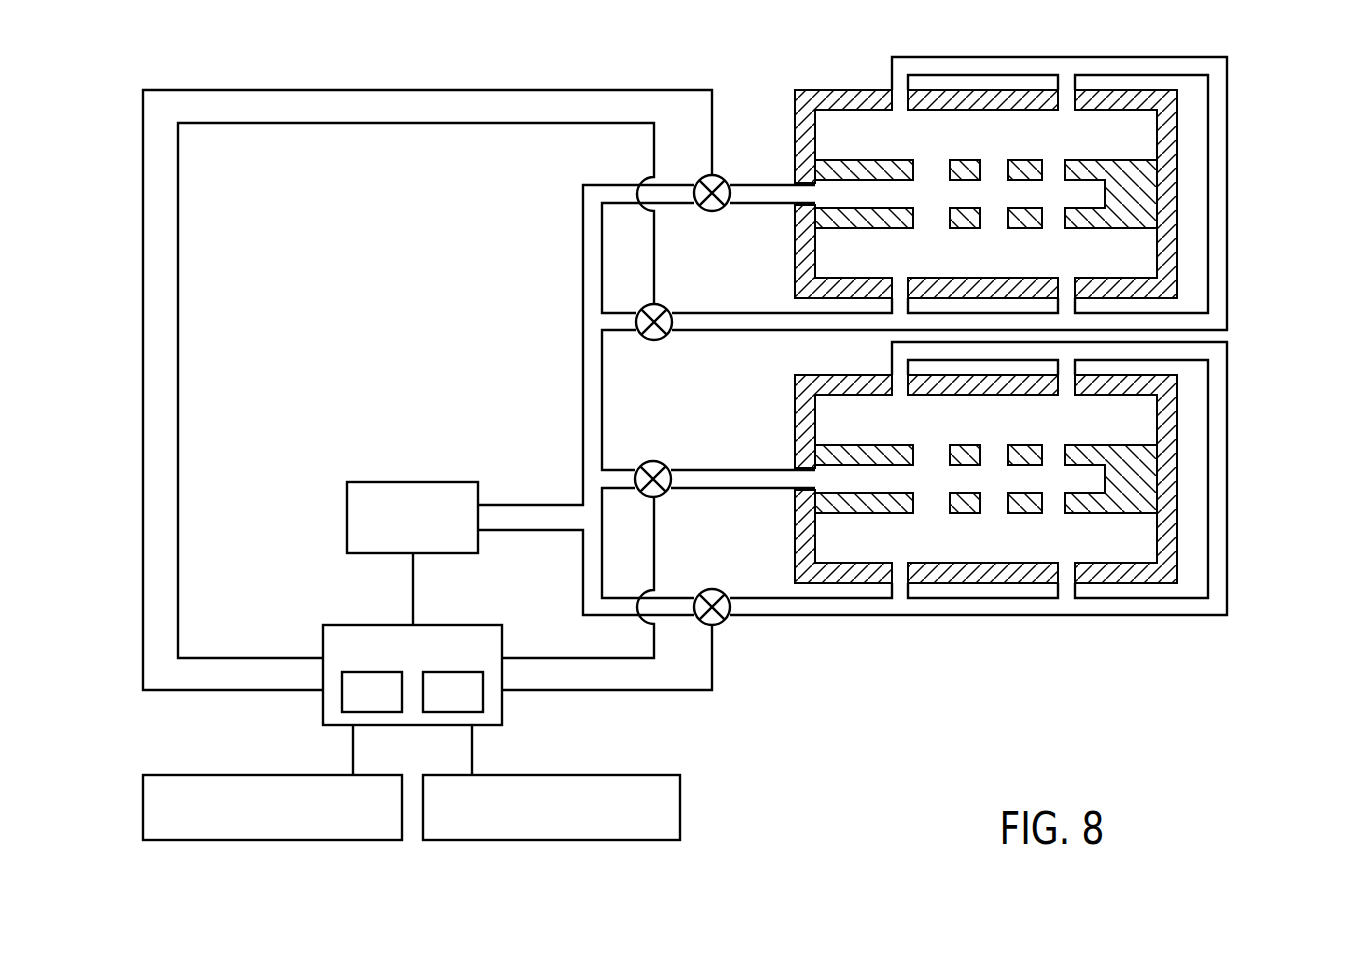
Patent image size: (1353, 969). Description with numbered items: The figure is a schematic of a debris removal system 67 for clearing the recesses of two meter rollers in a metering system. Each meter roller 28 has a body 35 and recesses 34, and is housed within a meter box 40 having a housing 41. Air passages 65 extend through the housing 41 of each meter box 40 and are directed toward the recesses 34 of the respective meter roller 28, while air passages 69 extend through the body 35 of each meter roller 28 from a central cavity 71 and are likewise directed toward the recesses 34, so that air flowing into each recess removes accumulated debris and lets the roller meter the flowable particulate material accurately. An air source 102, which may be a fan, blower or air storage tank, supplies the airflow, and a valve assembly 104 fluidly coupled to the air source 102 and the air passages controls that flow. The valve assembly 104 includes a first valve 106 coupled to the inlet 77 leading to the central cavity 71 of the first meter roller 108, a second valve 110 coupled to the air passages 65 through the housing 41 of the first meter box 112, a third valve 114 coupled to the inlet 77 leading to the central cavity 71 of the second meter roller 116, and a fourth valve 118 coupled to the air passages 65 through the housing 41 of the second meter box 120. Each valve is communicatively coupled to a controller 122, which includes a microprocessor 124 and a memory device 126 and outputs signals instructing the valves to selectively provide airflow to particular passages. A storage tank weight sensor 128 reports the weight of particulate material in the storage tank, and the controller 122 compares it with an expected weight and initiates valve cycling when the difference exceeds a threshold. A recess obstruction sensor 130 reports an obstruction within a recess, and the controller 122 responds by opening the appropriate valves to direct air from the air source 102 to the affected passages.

The meter roller 28 is at (878, 232).
The recesses 34 is at (1130, 255).
The body 35 is at (818, 165).
The meter box 40 is at (1009, 336).
The housing 41 is at (1178, 196).
The air passages 65 is at (894, 288).
The debris removal system 67 is at (311, 85).
The air passages 69 is at (914, 171).
The central cavity 71 is at (1032, 198).
The inlet 77 is at (770, 207).
The air source 102 is at (378, 482).
The valve assembly 104 is at (718, 648).
The first valve 106 is at (703, 180).
The first meter roller 108 is at (858, 124).
The second valve 110 is at (661, 339).
The first meter box 112 is at (1235, 244).
The third valve 114 is at (648, 462).
The second meter roller 116 is at (858, 409).
The fourth valve 118 is at (706, 624).
The second meter box 120 is at (1235, 529).
The controller 122 is at (477, 636).
The microprocessor 124 is at (483, 692).
The memory device 126 is at (342, 690).
The storage tank weight sensor 128 is at (143, 805).
The recess obstruction sensor 130 is at (680, 805).